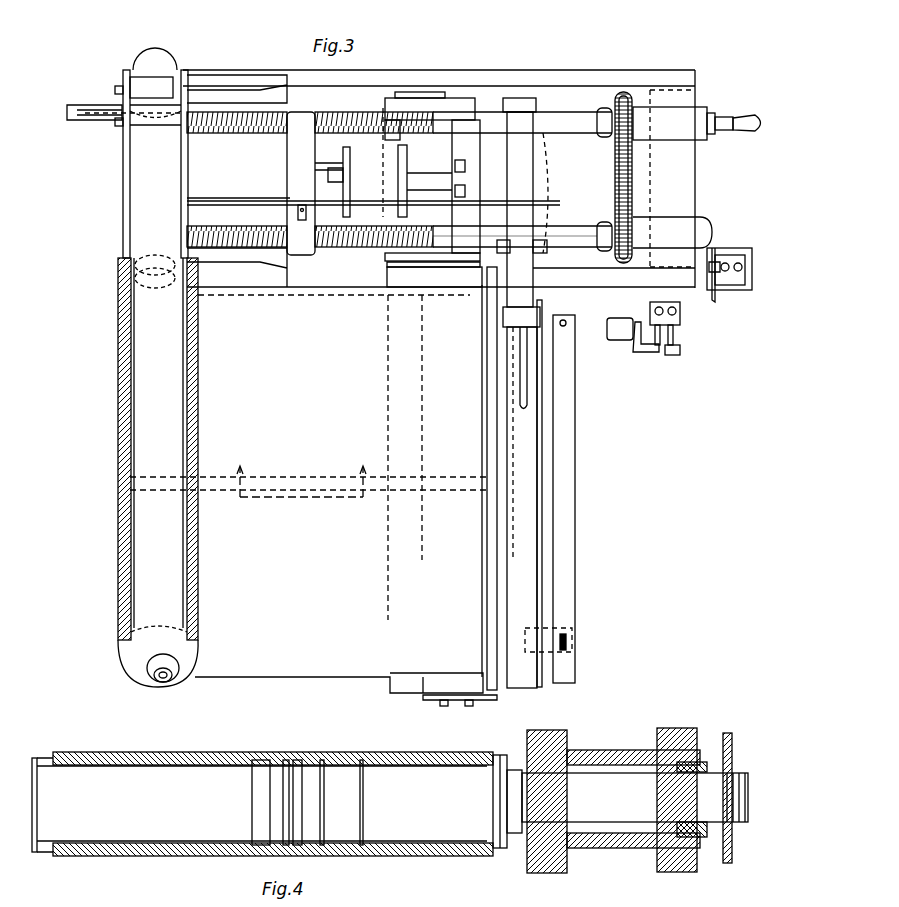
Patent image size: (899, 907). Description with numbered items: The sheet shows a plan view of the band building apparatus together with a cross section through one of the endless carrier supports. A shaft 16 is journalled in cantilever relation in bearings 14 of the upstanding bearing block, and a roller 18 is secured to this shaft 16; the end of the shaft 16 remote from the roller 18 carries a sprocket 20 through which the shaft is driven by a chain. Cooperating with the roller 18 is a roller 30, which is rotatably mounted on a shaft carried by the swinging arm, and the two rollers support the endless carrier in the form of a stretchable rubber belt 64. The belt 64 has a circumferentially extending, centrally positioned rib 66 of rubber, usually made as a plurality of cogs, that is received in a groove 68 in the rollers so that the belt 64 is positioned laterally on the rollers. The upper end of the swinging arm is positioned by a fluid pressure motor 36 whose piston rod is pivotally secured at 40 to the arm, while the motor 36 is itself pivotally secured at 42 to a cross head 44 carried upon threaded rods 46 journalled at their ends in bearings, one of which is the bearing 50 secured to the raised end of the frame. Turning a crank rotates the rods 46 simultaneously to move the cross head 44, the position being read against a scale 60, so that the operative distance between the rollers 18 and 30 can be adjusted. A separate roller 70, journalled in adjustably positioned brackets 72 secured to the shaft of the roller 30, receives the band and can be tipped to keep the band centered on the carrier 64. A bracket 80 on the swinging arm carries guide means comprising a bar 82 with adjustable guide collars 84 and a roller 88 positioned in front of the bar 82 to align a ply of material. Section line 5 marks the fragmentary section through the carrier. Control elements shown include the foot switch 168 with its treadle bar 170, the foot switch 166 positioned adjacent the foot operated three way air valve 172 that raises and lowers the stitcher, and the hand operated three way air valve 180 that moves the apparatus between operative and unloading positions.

In FIG. 3, the fluid pressure motor 36 is at (388, 160).
In FIG. 3, the pivotal connection 40 is at (465, 180).
In FIG. 3, the pivotal connection 42 is at (345, 148).
In FIG. 3, the cross head 44 is at (295, 163).
In FIG. 3, the scale 60 is at (206, 203).
In FIG. 3, the bracket 80 is at (590, 128).
In FIG. 3, the threaded rods 46 is at (568, 228).
In FIG. 3, the bearing 50 is at (676, 222).
In FIG. 3, the hand operated three way air valve 180 is at (745, 275).
In FIG. 3, the adjustable guide collars 84 is at (535, 318).
In FIG. 3, the bar 82 is at (527, 572).
In FIG. 3, the roller 70 is at (497, 690).
In FIG. 3, the roller 88 is at (545, 490).
In FIG. 3, the treadle bar 170 is at (570, 573).
In FIG. 3, the foot switch 168 is at (535, 635).
In FIG. 3, the roller 30 is at (452, 690).
In FIG. 3, the brackets 72 is at (464, 262).
In FIG. 3, the section line 5- 5 is at (302, 466).
In FIG. 3, the three way air valve 172 is at (680, 318).
In FIG. 3, the foot switch 166 is at (630, 338).
In FIG. 4, the roller 18 is at (38, 755).
In FIG. 4, the stretchable rubber belt 64 is at (195, 750).
In FIG. 4, the rib 66 is at (312, 755).
In FIG. 4, the groove 68 is at (285, 805).
In FIG. 4, the bearings 14 is at (670, 825).
In FIG. 4, the shaft 16 is at (610, 793).
In FIG. 4, the sprocket 20 is at (730, 745).